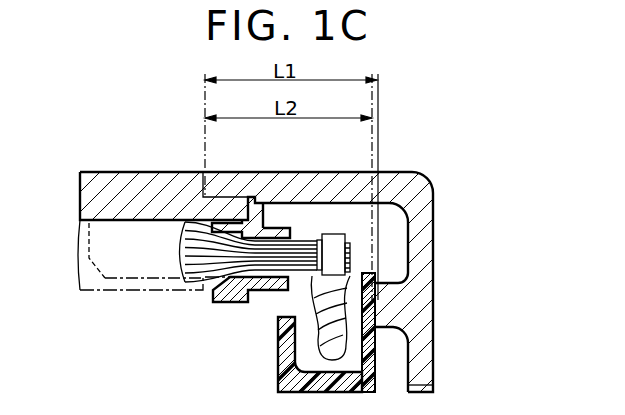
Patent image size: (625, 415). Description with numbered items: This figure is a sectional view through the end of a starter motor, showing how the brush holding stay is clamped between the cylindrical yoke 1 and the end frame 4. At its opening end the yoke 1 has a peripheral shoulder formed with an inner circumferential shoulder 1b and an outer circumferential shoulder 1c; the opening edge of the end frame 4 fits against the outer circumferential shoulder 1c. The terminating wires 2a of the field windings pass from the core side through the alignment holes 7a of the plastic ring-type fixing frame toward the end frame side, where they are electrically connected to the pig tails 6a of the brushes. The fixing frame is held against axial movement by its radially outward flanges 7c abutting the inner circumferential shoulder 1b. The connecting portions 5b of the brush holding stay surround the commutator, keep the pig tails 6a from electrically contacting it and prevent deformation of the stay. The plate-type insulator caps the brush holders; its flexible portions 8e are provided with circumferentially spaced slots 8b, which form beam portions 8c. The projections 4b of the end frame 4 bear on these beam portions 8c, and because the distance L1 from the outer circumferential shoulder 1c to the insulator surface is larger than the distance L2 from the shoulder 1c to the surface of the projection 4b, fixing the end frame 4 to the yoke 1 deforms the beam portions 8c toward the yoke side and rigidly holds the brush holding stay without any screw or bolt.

The cylindrical yoke 1 is at (96, 188).
The inner circumferential shoulder 1b is at (255, 197).
The outer circumferential shoulder 1c is at (204, 192).
The terminating wires 2a is at (175, 222).
The end frame 4 is at (419, 233).
The projections 4b is at (383, 298).
The connecting portions 5b is at (278, 386).
The pig tails 6a is at (330, 320).
The alignment holes 7a is at (300, 202).
The flanges 7c is at (283, 231).
The slots 8b is at (372, 352).
The beam portions 8c is at (373, 278).
The flexible portions 8e is at (372, 385).